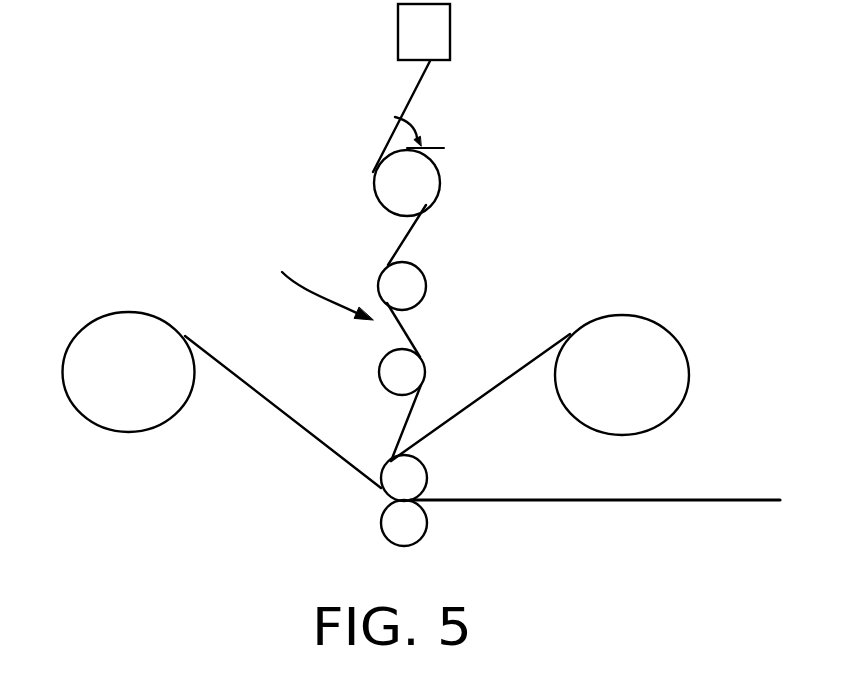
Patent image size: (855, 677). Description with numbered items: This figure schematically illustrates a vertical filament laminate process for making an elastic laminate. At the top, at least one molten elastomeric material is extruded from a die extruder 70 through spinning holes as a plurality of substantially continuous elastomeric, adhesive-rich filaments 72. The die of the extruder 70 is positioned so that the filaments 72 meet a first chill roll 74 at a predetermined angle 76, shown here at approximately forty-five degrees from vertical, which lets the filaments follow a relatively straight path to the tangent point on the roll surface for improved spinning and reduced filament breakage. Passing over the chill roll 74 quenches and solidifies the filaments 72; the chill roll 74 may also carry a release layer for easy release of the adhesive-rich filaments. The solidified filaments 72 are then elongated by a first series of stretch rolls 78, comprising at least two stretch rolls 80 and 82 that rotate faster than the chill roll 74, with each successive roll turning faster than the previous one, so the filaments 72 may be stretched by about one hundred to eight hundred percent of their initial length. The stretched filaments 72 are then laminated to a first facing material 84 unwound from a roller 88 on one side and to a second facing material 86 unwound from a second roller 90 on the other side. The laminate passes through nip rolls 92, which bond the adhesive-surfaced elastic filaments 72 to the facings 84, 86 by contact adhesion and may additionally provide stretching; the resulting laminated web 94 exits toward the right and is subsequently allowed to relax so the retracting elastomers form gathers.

The die extruder 70 is at (408, 70).
The filaments 72 is at (387, 152).
The first chill roll 74 is at (390, 192).
The predetermined angle 76 is at (404, 116).
The first series of stretch rolls 78 is at (320, 279).
The stretch roll 80 is at (410, 278).
The second stretch roll 82 is at (388, 367).
The first facing material 84 is at (288, 419).
The second facing material 86 is at (451, 422).
The roller 88 is at (108, 337).
The second roller 90 is at (642, 338).
The nip rolls 92 is at (407, 478).
The laminated web 94 is at (600, 502).